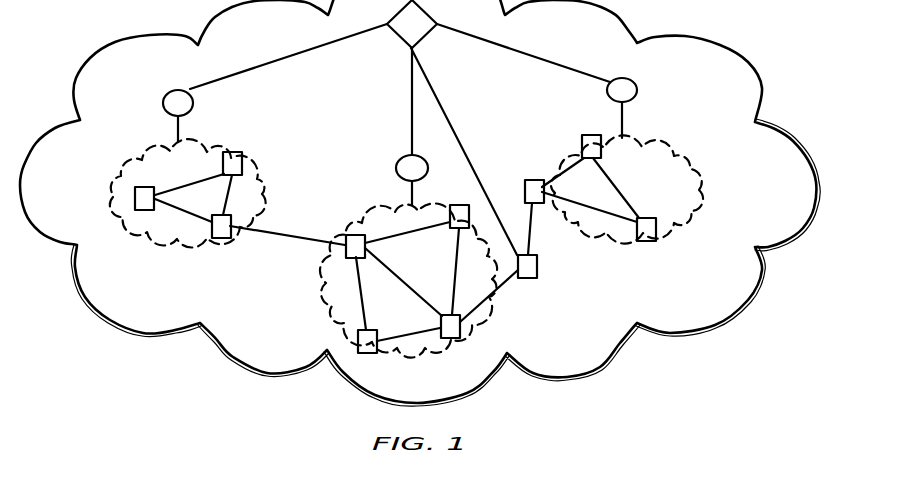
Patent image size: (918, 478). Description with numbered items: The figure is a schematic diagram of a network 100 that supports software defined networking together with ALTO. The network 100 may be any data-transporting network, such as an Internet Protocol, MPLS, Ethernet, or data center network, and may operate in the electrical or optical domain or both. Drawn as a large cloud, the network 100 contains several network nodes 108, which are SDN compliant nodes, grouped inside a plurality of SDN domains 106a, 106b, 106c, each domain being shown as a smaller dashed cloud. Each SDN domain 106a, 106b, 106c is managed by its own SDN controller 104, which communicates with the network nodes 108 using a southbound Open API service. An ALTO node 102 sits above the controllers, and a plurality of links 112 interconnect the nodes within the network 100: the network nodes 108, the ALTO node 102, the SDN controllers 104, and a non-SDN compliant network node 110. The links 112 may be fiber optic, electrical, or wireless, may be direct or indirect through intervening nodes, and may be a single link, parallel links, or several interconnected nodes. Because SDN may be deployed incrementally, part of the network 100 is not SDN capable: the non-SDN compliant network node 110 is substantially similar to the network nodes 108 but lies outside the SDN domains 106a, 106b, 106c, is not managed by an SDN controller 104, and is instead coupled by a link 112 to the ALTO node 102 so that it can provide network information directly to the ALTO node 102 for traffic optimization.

The network 100 is at (140, 36).
The ALTO node 102 is at (427, 38).
The SDN controller 104 is at (193, 103).
The SDN domain 106a is at (160, 147).
The SDN domain 106b is at (333, 328).
The SDN domain 106c is at (658, 147).
The network node 108 is at (235, 152).
The non-SDN compliant network node 110 is at (529, 279).
The link 112 is at (282, 60).